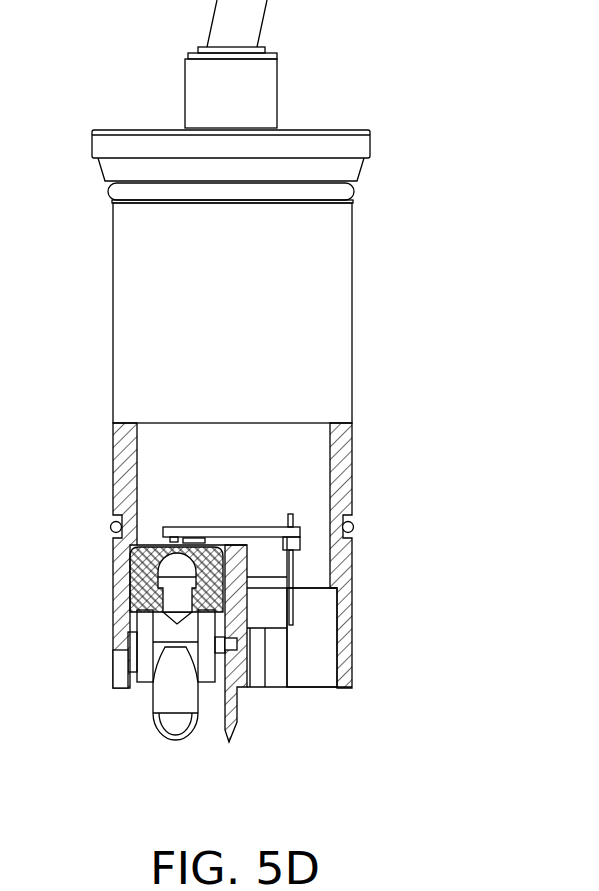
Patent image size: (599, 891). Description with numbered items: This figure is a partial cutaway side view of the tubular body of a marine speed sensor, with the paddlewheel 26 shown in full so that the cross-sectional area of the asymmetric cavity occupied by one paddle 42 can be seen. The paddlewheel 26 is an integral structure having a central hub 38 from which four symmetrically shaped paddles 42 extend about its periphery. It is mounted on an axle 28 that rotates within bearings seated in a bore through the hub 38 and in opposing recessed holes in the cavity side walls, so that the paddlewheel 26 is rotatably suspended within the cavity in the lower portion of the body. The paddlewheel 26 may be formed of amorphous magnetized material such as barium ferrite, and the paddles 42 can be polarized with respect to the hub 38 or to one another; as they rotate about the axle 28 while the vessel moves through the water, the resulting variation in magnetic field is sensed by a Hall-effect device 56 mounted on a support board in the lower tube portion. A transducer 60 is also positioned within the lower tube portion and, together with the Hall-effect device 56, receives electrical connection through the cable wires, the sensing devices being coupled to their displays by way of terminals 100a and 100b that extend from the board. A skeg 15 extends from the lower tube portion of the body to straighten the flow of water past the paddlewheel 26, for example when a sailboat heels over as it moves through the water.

The skeg 15 is at (233, 733).
The paddlewheel 26 is at (180, 707).
The axle 28 is at (125, 643).
The hub 38 is at (132, 618).
The paddle 42 is at (172, 567).
The Hall-effect device 56 is at (190, 540).
The transducer 60 is at (275, 620).
The terminal 100a is at (295, 562).
The terminal 100b is at (291, 587).